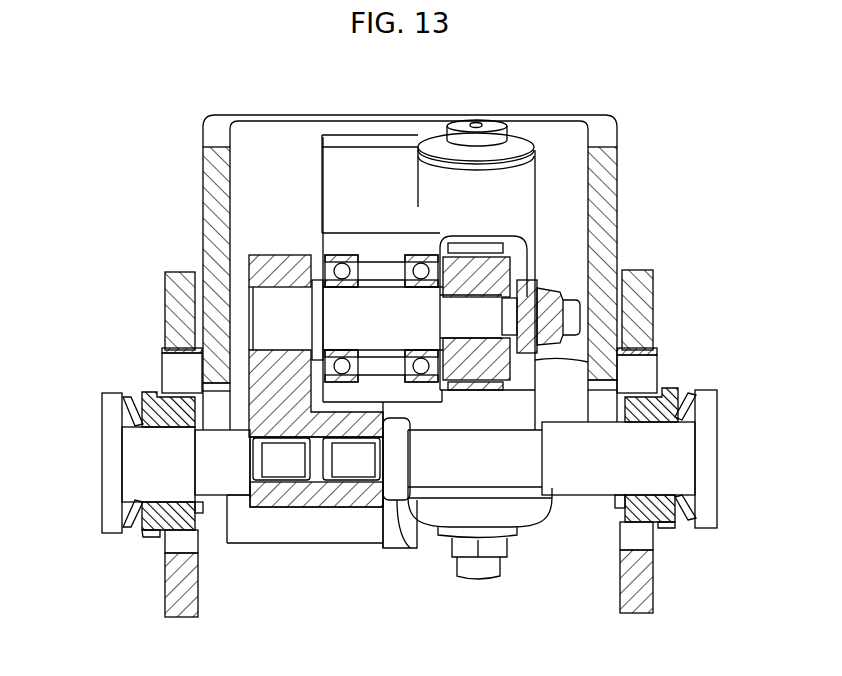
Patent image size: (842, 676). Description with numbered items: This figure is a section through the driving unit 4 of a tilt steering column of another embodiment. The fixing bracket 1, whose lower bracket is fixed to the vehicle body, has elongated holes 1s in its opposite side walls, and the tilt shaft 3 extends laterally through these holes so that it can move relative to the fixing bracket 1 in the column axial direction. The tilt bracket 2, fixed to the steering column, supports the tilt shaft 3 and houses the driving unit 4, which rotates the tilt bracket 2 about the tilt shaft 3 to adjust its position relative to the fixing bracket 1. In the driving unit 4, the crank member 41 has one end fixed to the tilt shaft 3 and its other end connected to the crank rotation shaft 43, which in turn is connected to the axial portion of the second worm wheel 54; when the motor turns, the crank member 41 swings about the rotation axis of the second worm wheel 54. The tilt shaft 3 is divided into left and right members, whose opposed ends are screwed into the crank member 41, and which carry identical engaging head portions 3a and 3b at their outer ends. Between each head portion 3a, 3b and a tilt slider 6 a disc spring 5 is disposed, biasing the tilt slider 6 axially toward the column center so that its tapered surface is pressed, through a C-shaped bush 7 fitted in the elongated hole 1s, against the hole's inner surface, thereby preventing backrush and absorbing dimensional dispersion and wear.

The fixing bracket 1 is at (182, 603).
The elongated hole 1s is at (167, 552).
The tilt bracket 2 is at (213, 181).
The tilt shaft 3 is at (570, 478).
The engaging head portion 3a is at (112, 510).
The engaging head portion 3b is at (710, 507).
The driving unit 4 is at (416, 566).
The crank member 41 is at (328, 495).
The crank rotation shaft 43 is at (267, 298).
The disc spring 5 is at (549, 199).
The second worm wheel 54 is at (510, 263).
The tilt slider 6 is at (152, 392).
The bush 7 is at (170, 360).